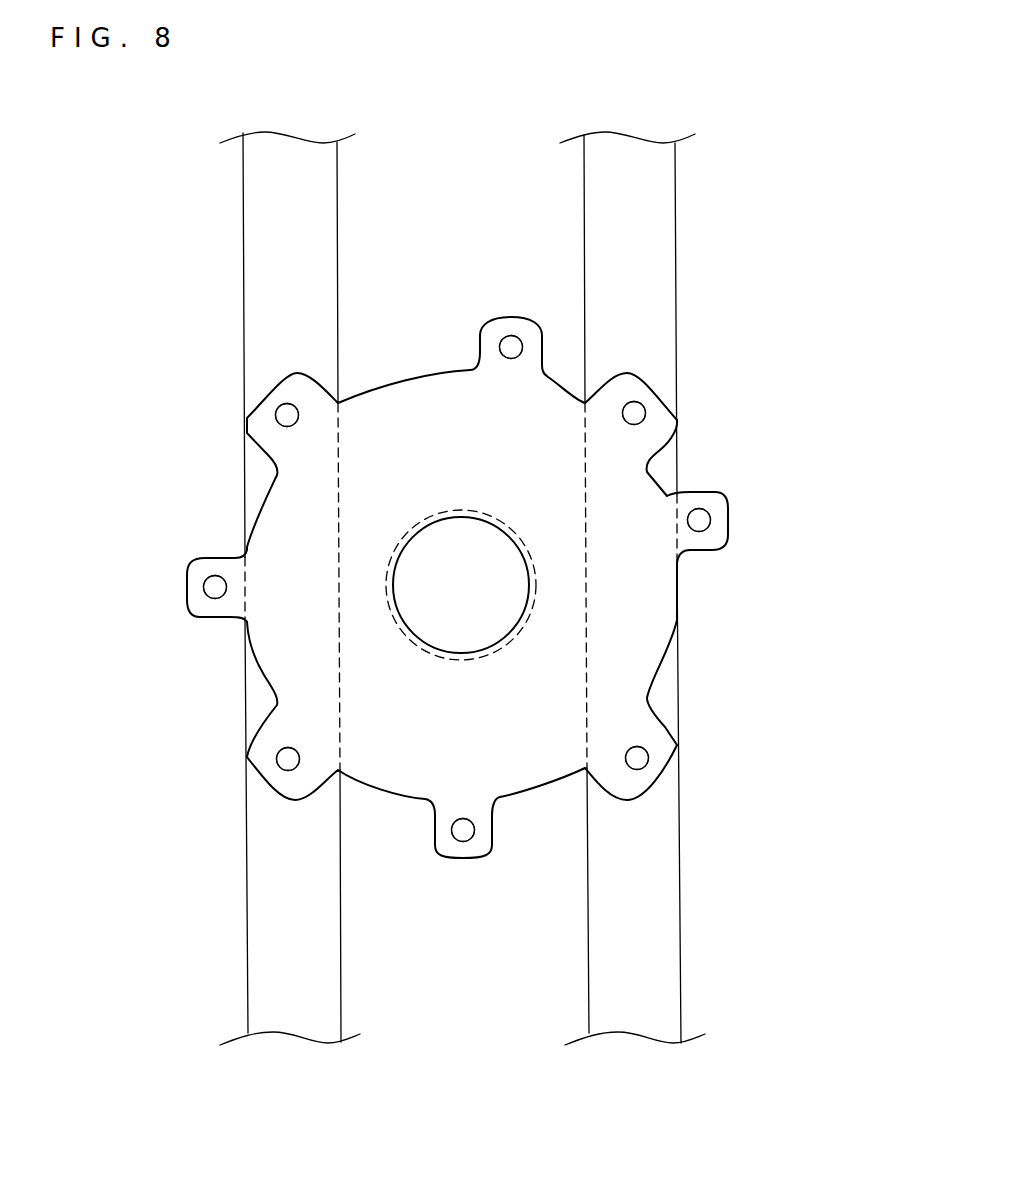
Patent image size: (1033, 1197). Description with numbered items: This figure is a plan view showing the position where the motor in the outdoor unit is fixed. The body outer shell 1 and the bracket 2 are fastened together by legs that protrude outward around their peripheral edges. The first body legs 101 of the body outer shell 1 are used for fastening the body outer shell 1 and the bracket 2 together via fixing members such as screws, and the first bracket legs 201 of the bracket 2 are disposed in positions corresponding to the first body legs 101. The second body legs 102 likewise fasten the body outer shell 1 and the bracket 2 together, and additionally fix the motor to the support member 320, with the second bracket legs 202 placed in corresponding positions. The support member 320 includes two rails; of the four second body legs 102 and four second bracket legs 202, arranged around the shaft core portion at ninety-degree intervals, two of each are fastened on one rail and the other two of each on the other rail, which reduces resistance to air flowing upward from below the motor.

The body outer shell 1 is at (391, 352).
The bracket 2 is at (460, 452).
The first body legs 101 is at (513, 320).
The first bracket legs 201 is at (460, 741).
The second body legs 102 is at (262, 402).
The second bracket legs 202 is at (462, 557).
The support member 320 is at (263, 967).